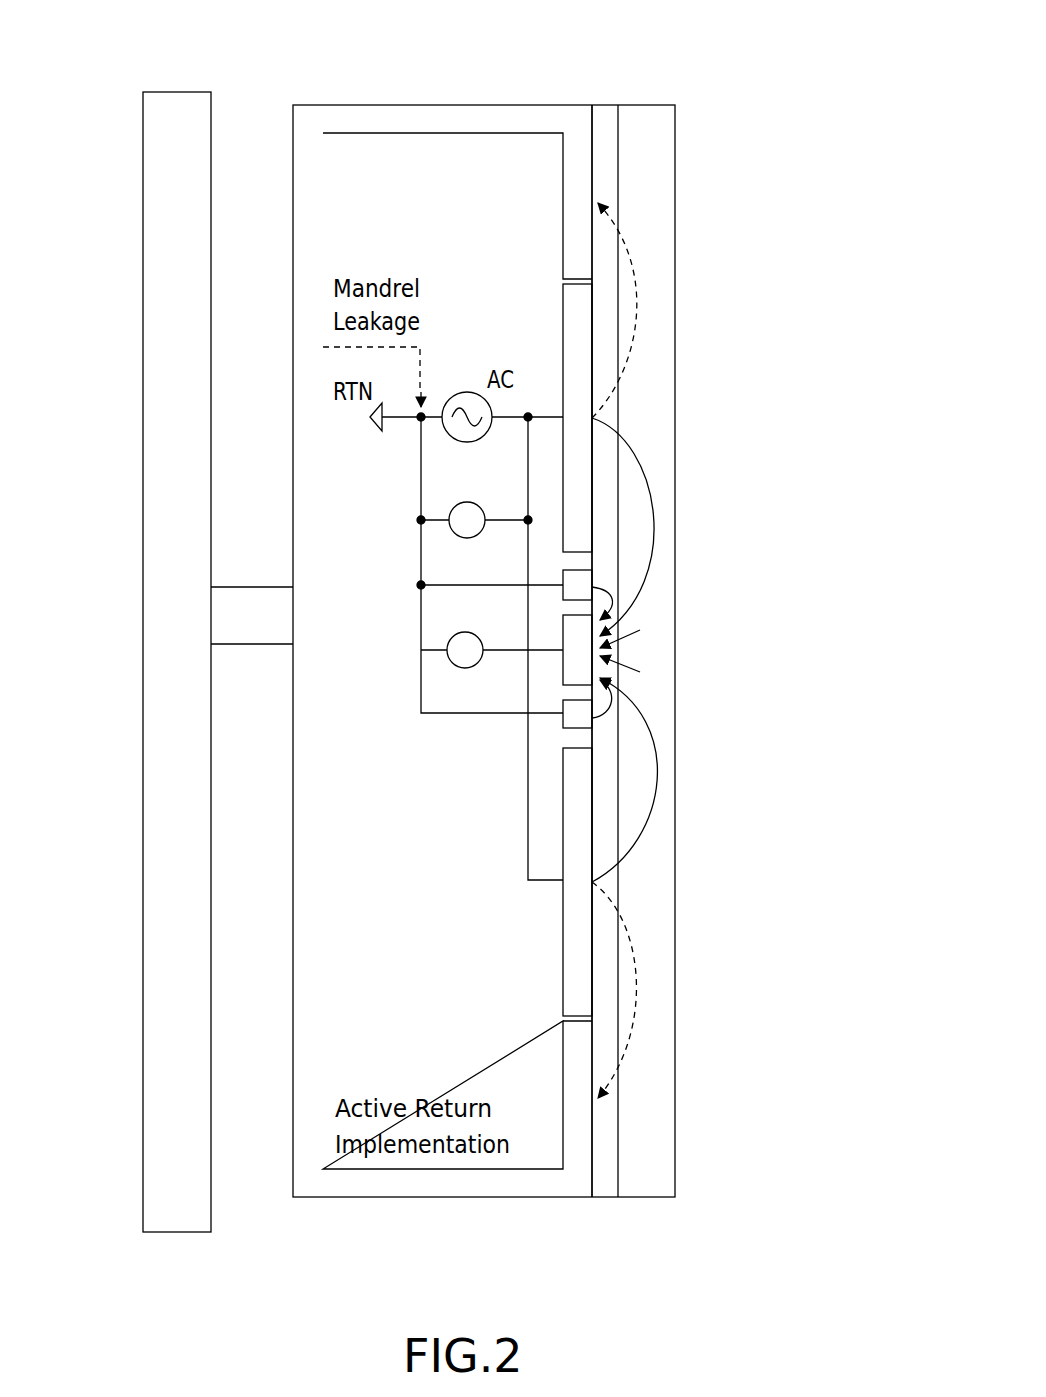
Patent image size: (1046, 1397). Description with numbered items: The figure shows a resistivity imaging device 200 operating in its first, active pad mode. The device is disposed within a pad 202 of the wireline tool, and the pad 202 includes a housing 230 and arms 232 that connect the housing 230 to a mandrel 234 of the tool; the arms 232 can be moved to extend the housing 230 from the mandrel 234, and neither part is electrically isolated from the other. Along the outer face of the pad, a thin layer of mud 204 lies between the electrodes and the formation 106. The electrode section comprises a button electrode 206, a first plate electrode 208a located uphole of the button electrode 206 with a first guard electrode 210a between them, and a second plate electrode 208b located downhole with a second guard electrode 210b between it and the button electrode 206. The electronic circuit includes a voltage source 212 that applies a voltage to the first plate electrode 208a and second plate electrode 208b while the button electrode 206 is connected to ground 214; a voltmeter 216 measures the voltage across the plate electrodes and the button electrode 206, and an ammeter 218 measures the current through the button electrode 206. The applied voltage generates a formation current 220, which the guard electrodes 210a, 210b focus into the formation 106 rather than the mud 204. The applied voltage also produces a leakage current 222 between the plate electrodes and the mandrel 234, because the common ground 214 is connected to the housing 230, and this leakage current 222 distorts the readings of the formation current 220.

The resistivity imaging device 200 is at (803, 88).
The pad 202 is at (578, 160).
The mud 204 is at (605, 128).
The formation 106 is at (655, 418).
The button electrode 206 is at (573, 652).
The first plate electrode 208a is at (578, 357).
The second plate electrode 208b is at (575, 915).
The first guard electrode 210a is at (580, 580).
The second guard electrode 210b is at (568, 722).
The voltage source 212 is at (467, 392).
The ground 214 is at (381, 432).
The voltmeter 216 is at (482, 508).
The ammeter 218 is at (479, 638).
The formation current 220 is at (660, 503).
The leakage current 222 is at (642, 303).
The housing 230 is at (456, 1197).
The arms 232 is at (253, 645).
The mandrel 234 is at (143, 655).